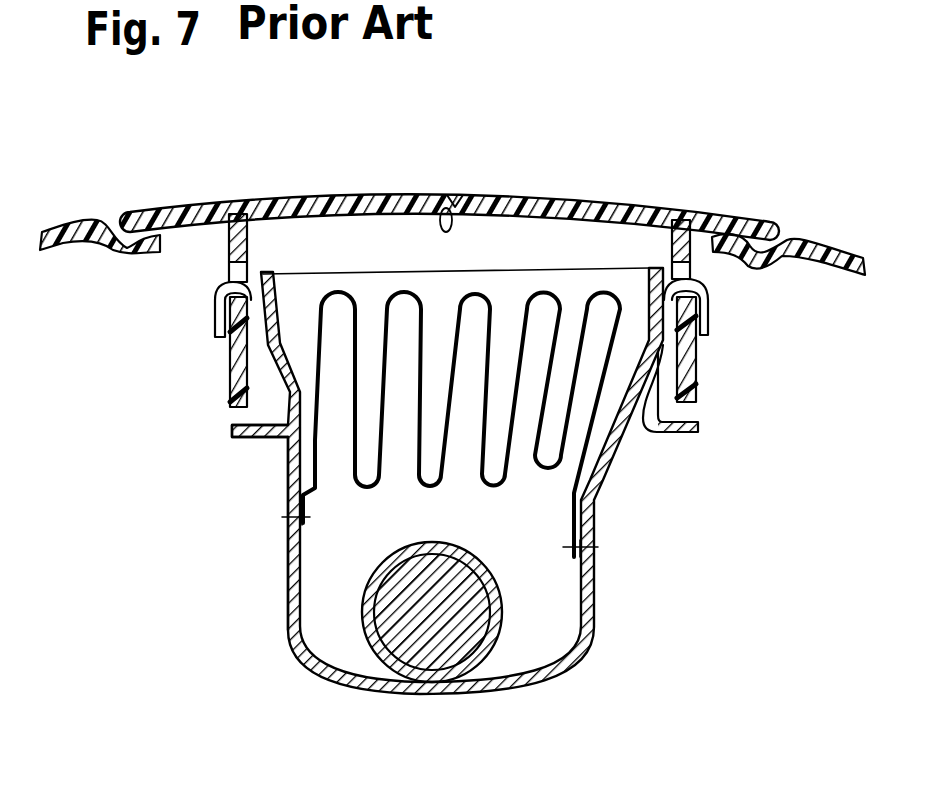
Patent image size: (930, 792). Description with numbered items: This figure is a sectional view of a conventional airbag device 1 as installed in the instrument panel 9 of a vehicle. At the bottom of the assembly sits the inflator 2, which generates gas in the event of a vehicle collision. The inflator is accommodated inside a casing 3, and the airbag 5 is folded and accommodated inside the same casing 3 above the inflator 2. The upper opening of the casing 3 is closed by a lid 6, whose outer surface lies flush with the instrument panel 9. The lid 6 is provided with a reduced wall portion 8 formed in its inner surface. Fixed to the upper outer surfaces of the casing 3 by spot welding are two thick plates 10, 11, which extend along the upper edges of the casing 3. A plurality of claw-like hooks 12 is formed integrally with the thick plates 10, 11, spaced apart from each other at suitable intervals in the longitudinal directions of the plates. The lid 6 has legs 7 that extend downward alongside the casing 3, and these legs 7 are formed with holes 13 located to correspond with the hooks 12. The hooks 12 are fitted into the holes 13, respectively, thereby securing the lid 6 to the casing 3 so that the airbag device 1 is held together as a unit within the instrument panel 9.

The airbag device 1 is at (620, 596).
The inflator 2 is at (478, 640).
The casing 3 is at (268, 548).
The airbag 5 is at (448, 478).
The lid 6 is at (600, 196).
The legs 7 is at (230, 398).
The reduced wall portion 8 is at (440, 205).
The instrument panel 9 is at (836, 238).
The thick plate 10 is at (666, 442).
The thick plate 11 is at (243, 453).
The claw-like hooks 12 is at (218, 342).
The holes 13 is at (230, 277).